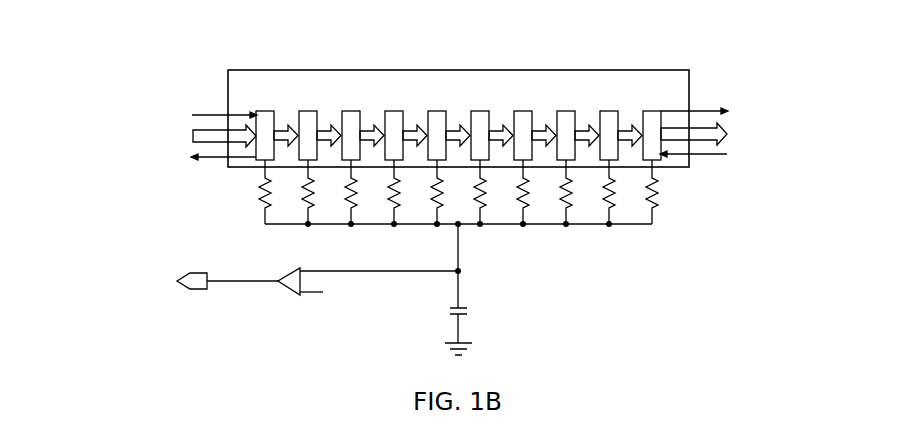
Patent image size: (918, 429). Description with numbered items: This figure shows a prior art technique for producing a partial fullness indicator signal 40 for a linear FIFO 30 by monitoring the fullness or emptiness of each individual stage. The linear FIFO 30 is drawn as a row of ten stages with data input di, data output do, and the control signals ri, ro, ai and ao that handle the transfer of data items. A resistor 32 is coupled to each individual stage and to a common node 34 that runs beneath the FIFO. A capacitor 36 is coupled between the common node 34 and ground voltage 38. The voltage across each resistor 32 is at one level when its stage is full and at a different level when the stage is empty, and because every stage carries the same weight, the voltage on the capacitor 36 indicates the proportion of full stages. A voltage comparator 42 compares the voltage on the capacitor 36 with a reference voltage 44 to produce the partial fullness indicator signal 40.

The linear FIFO 30 is at (455, 70).
The resistor 32 is at (263, 205).
The common node 34 is at (460, 226).
The capacitor 36 is at (468, 311).
The ground voltage 38 is at (470, 350).
The partial fullness indicator signal 40 is at (195, 290).
The voltage comparator 42 is at (292, 297).
The reference voltage 44 is at (346, 305).